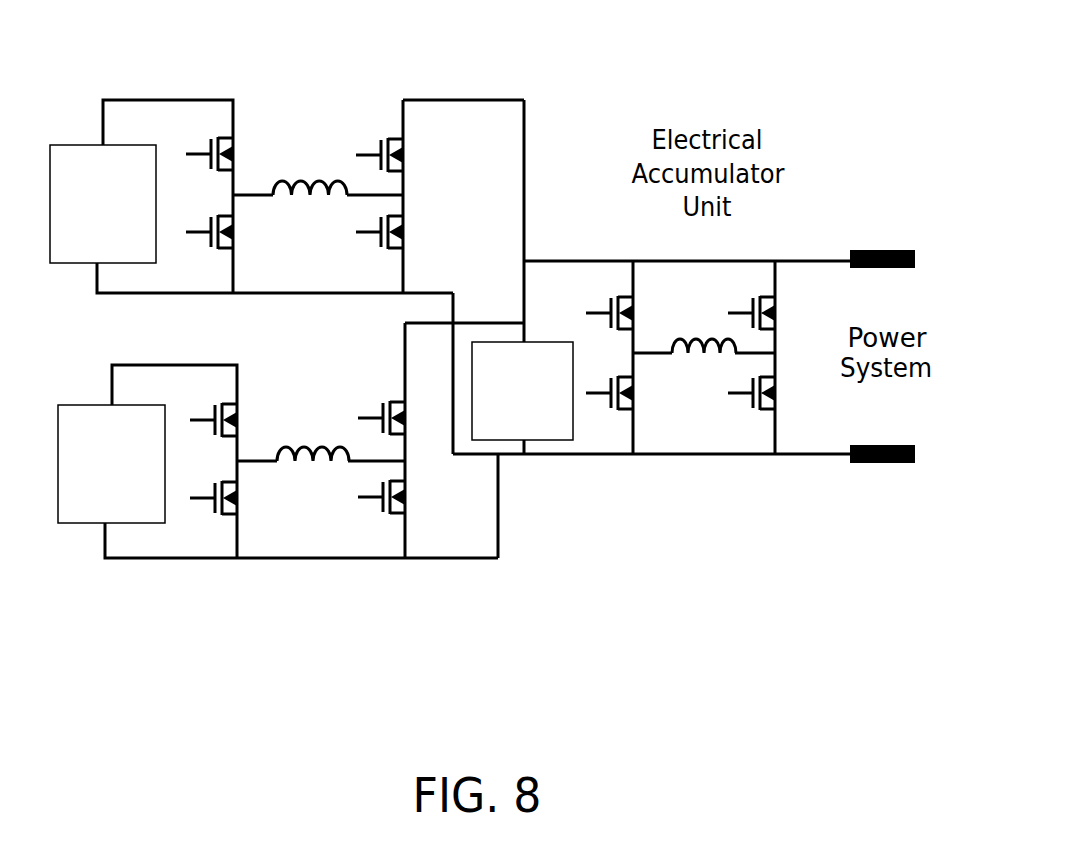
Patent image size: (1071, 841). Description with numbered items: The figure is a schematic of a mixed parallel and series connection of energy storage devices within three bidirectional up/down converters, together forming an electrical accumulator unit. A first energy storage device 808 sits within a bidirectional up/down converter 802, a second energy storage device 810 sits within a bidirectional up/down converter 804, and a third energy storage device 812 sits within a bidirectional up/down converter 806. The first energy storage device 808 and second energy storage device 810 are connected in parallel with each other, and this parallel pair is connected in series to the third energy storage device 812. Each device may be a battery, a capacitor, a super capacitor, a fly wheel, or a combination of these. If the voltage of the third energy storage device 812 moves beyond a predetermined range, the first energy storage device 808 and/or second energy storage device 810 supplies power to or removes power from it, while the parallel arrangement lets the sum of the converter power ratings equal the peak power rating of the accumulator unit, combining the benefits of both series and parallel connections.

The bidirectional up/down converter 802 is at (310, 146).
The bidirectional up/down converter 804 is at (314, 497).
The bidirectional up/down converter 806 is at (702, 412).
The first energy storage device 808 is at (76, 143).
The second energy storage device 810 is at (76, 402).
The third energy storage device 812 is at (538, 441).